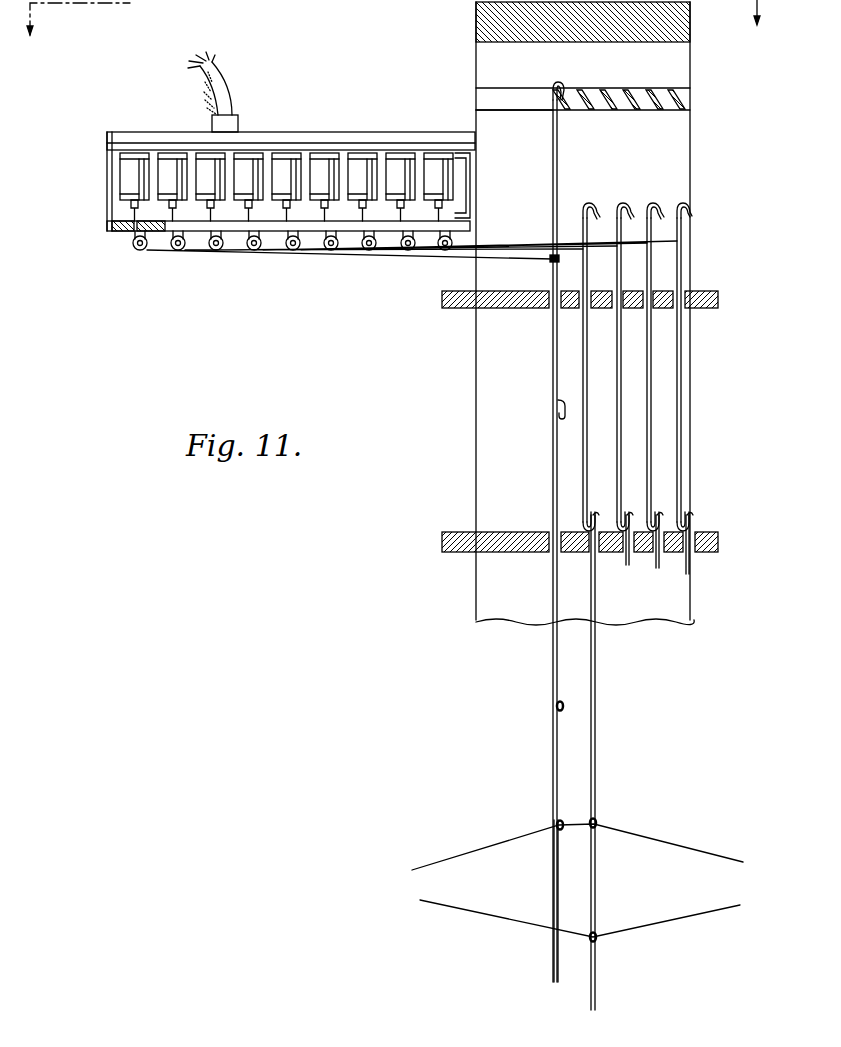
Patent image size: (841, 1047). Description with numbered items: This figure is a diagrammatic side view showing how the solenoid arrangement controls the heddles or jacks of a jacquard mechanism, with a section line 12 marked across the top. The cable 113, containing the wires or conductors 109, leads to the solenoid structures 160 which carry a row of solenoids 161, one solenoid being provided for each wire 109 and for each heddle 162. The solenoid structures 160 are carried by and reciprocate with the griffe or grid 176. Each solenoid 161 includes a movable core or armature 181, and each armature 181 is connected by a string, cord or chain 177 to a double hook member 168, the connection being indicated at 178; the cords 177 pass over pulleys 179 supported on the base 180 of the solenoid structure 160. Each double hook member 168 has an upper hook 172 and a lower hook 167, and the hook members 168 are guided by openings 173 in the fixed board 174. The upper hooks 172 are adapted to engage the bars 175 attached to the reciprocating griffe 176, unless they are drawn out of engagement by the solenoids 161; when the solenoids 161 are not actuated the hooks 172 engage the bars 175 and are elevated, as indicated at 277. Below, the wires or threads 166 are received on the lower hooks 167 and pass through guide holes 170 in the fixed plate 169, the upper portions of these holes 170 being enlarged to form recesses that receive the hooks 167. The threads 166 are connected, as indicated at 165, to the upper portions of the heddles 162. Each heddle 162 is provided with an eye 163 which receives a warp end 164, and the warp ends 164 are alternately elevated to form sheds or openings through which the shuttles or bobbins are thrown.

The section line 12- 12 is at (394, 31).
The wires or conductors 109 is at (188, 68).
The cable 113 is at (224, 92).
The solenoid structures 160 is at (347, 131).
The solenoids 161 is at (212, 167).
The movable core or armature 181 is at (133, 205).
The base 180 is at (290, 229).
The pulleys 179 is at (148, 251).
The string, cord or chain 177 is at (128, 233).
The griffe or grid 176 is at (686, 74).
The bars 175 is at (608, 89).
The elevated position of hooks 277 is at (548, 109).
The hooks 172 is at (560, 88).
The double hook members 168 is at (553, 360).
The connection of cord to hook member 178 is at (550, 260).
The fixed board 174 is at (718, 292).
The openings 173 is at (552, 304).
The hooks 167 is at (556, 405).
The fixed plate 169 is at (718, 535).
The guide holes 170 is at (550, 553).
The wires or threads 166 is at (556, 645).
The connection of heddle to thread 165 is at (558, 708).
The heddles 162 is at (556, 793).
The eye 163 is at (558, 831).
The warp end 164 is at (698, 907).